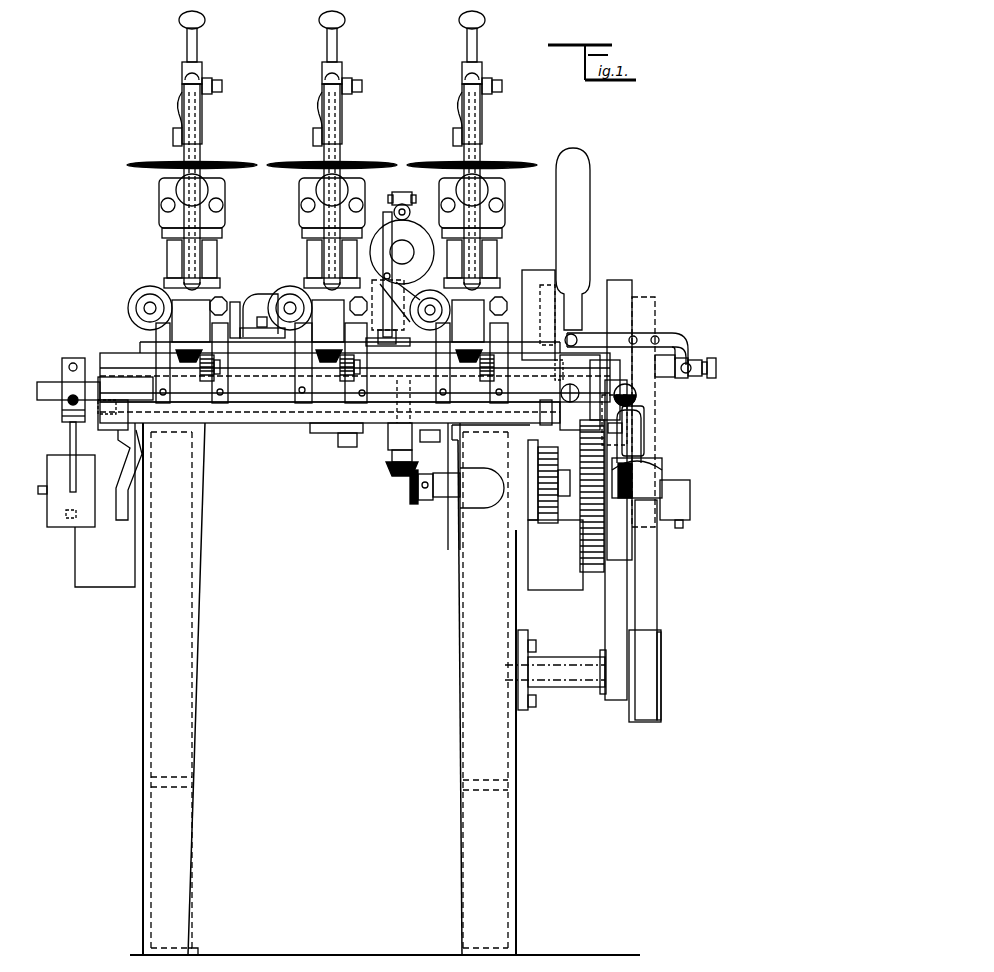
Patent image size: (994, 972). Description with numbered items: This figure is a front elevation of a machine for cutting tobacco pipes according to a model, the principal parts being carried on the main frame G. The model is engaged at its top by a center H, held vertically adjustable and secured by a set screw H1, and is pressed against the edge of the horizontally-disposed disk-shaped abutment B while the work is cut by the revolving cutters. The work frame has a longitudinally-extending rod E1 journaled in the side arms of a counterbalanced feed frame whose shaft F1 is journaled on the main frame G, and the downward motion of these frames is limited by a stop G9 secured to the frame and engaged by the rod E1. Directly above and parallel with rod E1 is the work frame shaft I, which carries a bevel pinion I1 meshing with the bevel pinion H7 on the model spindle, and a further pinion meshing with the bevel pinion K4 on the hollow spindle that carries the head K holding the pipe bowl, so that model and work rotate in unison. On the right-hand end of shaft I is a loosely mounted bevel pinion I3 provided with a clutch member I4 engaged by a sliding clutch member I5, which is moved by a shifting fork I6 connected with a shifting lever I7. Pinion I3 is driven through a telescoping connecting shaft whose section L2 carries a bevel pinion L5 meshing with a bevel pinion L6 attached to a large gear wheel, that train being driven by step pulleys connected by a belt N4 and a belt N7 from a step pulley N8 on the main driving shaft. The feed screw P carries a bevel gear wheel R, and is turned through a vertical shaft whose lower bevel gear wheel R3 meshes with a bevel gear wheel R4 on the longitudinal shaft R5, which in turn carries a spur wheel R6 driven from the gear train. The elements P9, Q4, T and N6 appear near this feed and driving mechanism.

The center H is at (338, 45).
The set screw H1 is at (362, 86).
The disk-shaped abutment B is at (291, 163).
The roller T is at (412, 314).
The bevel pinion K4 is at (155, 355).
The head K is at (456, 350).
The bevel pinion H7 is at (316, 353).
The bevel pinion I1 is at (344, 378).
The shaft I is at (272, 368).
The rod E1 is at (244, 405).
The shaft F1 is at (308, 410).
The stop G9 is at (338, 440).
The link P9 is at (384, 218).
The pivot Q4 is at (410, 213).
The feed screw P is at (385, 250).
The bevel gear wheel R is at (422, 270).
The shifting lever I7 is at (583, 236).
The step pulley N8 is at (633, 296).
The bevel pinion I3 is at (660, 333).
The shifting fork I6 is at (686, 340).
The clutch member I4 is at (672, 378).
The clutch member I5 is at (700, 378).
The bevel gear wheel R3 is at (387, 468).
The bevel gear wheel R4 is at (422, 500).
The shaft R5 is at (474, 485).
The spur wheel R6 is at (543, 523).
The connecting shaft section L2 is at (590, 548).
The bevel pinion L6 is at (614, 500).
The bevel pinion L5 is at (637, 510).
The belt N4 is at (610, 620).
The belt N7 is at (650, 612).
The sleeve N6 is at (660, 668).
The main frame G is at (466, 733).